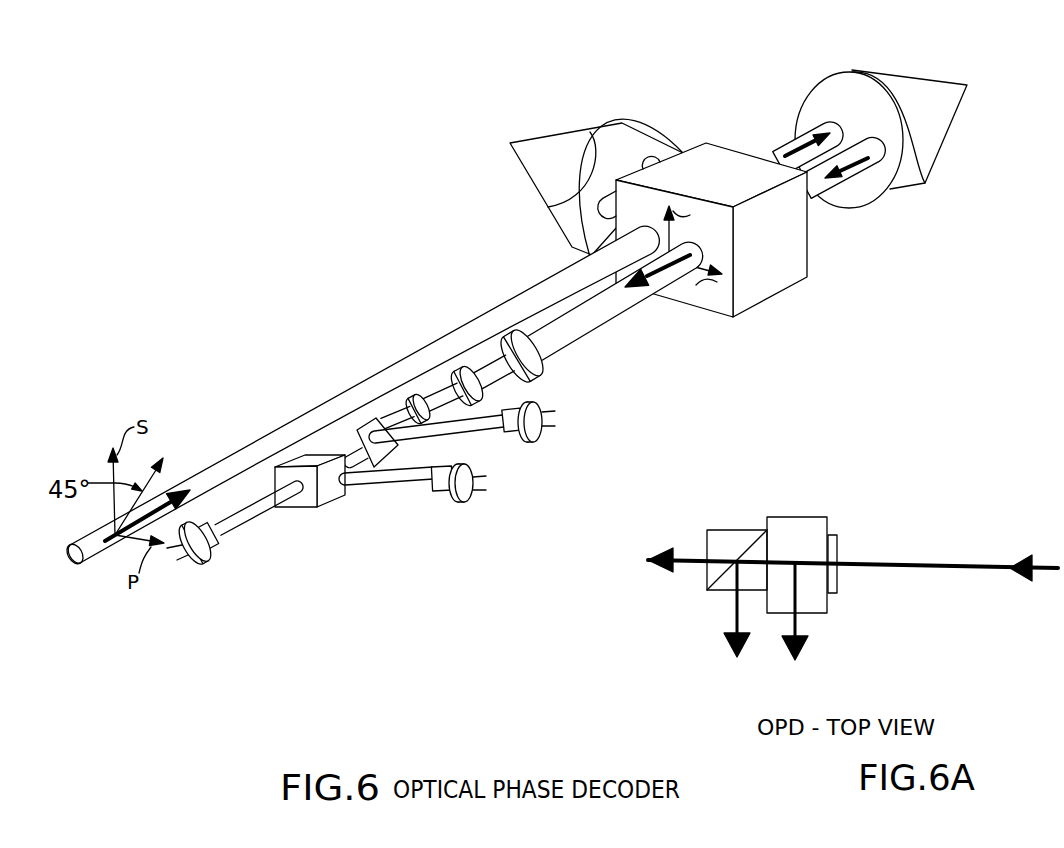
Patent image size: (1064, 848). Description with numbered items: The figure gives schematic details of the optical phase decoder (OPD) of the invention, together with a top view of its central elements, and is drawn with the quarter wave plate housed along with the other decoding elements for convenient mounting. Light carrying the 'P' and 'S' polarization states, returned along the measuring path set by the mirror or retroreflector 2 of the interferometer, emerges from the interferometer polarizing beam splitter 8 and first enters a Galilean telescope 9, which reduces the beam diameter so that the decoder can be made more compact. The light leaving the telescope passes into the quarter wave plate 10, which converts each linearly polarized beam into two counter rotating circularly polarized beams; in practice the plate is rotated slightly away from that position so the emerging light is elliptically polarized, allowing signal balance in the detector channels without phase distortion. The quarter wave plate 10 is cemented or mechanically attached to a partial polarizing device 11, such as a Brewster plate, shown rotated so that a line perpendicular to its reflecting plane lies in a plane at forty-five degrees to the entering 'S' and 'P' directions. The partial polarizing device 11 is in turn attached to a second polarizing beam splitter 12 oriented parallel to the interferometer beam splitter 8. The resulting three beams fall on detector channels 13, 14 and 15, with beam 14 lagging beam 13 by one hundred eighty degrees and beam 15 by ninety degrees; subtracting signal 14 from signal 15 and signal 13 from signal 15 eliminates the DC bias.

In FIG. 6, the mirror or retroreflector 2 is at (892, 85).
In FIG. 6, the polarizing beam splitter 8 is at (780, 290).
In FIG. 6, the Galilean telescope 9 is at (536, 380).
In FIG. 6, the quarter wave plate 10 is at (421, 396).
In FIG. 6A, the quarter wave plate 10 is at (840, 535).
In FIG. 6, the partial polarizing device 11 is at (360, 424).
In FIG. 6A, the partial polarizing device 11 is at (805, 515).
In FIG. 6, the second polarizing beam splitter 12 is at (292, 508).
In FIG. 6A, the second polarizing beam splitter 12 is at (730, 528).
In FIG. 6, the detector channel 13 is at (217, 547).
In FIG. 6A, the detector channel 13 is at (660, 552).
In FIG. 6, the detector channel 14 is at (440, 496).
In FIG. 6A, the detector channel 14 is at (728, 648).
In FIG. 6, the detector channel 15 is at (520, 443).
In FIG. 6A, the detector channel 15 is at (795, 648).